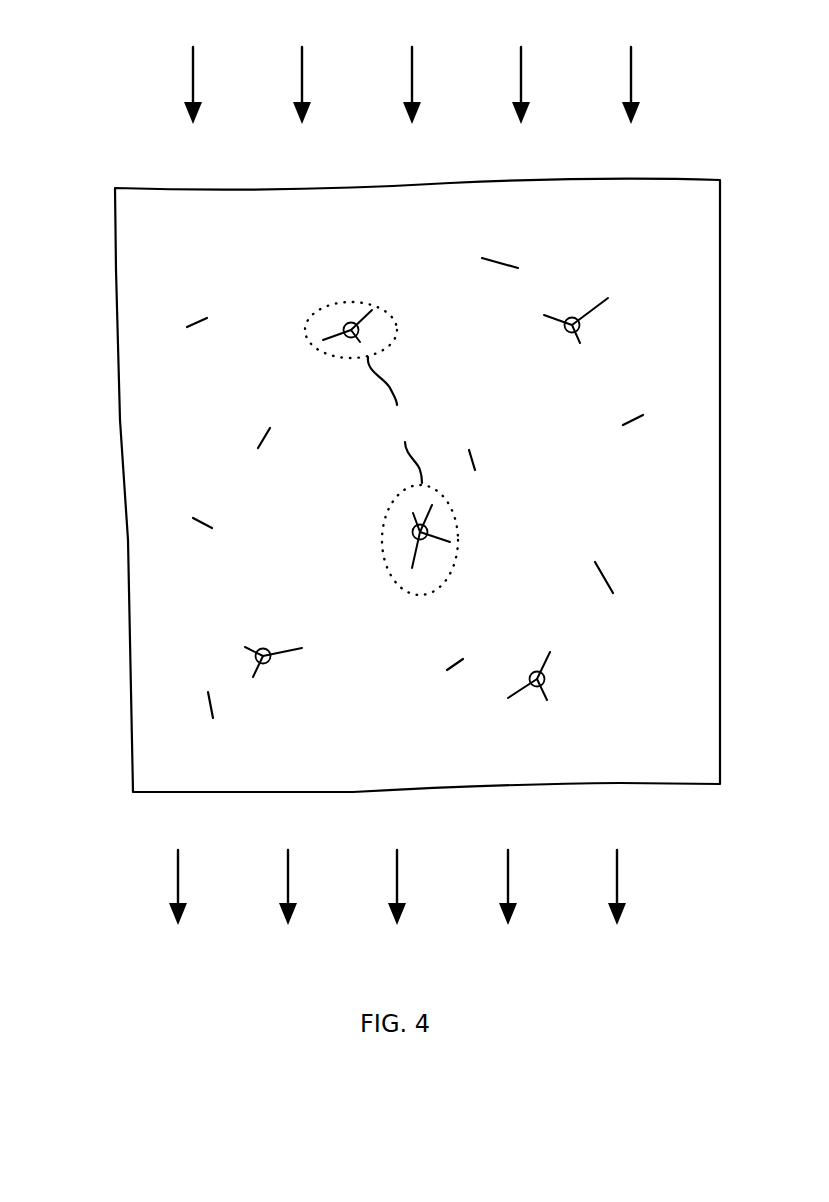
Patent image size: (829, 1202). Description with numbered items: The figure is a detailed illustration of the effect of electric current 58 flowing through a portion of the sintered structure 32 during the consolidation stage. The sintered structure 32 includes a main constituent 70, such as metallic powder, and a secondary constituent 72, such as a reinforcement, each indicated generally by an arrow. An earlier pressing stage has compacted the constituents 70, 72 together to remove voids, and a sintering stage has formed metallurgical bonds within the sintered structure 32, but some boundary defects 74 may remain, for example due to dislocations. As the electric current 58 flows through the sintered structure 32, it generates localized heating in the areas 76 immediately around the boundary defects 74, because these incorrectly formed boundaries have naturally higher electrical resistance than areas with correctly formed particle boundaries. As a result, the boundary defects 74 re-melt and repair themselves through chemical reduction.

The electric current 58 is at (632, 78).
The sintered structure 32 is at (678, 740).
The main constituent 70 is at (150, 413).
The secondary constituent 72 is at (140, 513).
The boundary defects 74 is at (325, 318).
The areas 76 is at (413, 476).